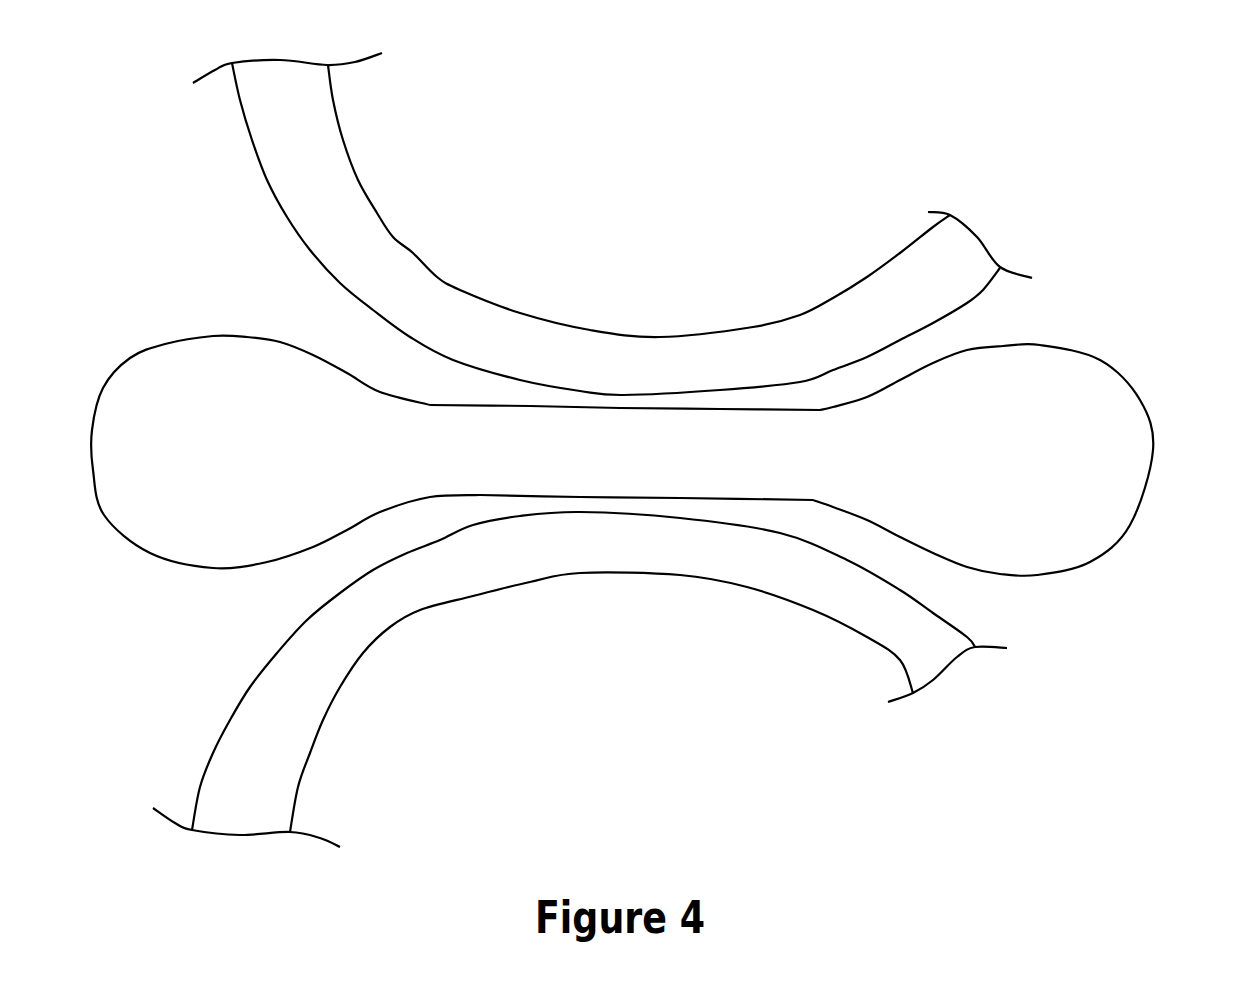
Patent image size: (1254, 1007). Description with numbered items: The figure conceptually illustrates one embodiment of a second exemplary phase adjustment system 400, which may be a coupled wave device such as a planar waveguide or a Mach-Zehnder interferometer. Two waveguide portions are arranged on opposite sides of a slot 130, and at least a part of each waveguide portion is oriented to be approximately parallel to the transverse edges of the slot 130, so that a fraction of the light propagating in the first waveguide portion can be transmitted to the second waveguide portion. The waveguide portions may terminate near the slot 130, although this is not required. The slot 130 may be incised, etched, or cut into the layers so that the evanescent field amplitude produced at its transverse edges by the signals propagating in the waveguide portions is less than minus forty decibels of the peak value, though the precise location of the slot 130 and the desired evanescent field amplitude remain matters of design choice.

The second exemplary phase adjustment system 400 is at (1030, 149).
The slot 130 is at (1150, 413).